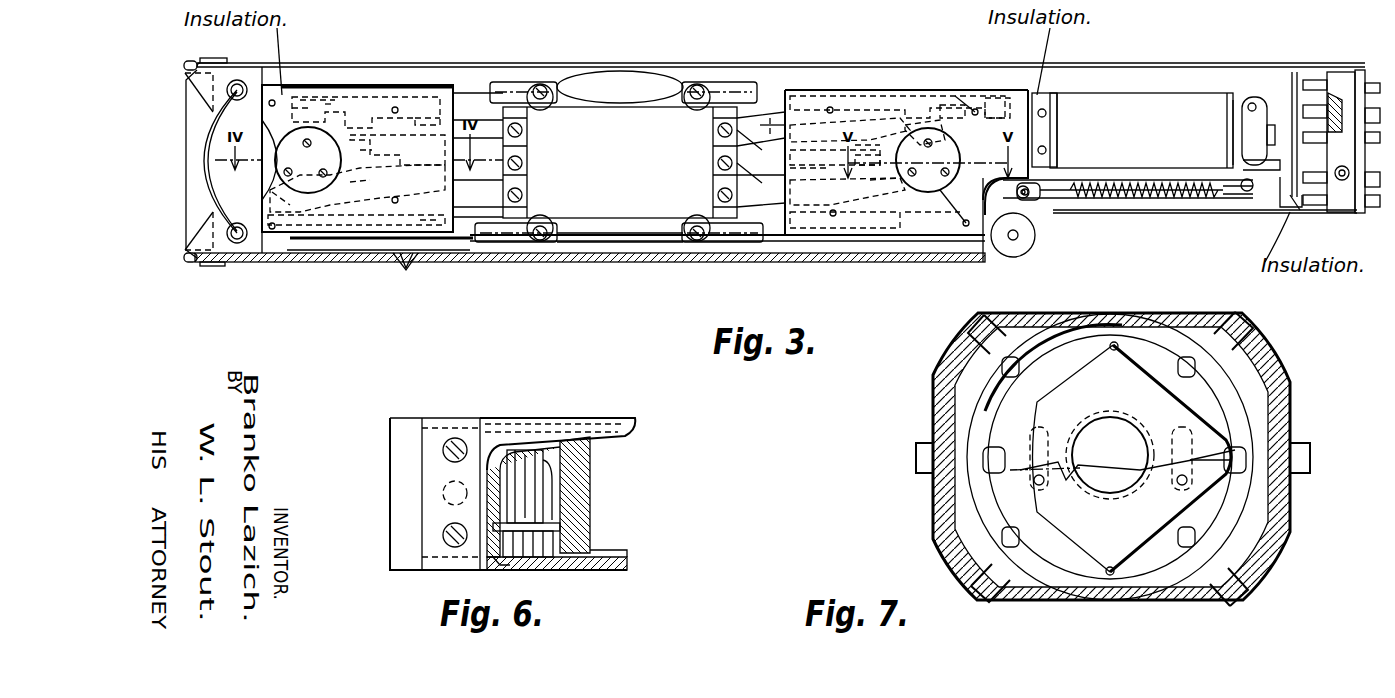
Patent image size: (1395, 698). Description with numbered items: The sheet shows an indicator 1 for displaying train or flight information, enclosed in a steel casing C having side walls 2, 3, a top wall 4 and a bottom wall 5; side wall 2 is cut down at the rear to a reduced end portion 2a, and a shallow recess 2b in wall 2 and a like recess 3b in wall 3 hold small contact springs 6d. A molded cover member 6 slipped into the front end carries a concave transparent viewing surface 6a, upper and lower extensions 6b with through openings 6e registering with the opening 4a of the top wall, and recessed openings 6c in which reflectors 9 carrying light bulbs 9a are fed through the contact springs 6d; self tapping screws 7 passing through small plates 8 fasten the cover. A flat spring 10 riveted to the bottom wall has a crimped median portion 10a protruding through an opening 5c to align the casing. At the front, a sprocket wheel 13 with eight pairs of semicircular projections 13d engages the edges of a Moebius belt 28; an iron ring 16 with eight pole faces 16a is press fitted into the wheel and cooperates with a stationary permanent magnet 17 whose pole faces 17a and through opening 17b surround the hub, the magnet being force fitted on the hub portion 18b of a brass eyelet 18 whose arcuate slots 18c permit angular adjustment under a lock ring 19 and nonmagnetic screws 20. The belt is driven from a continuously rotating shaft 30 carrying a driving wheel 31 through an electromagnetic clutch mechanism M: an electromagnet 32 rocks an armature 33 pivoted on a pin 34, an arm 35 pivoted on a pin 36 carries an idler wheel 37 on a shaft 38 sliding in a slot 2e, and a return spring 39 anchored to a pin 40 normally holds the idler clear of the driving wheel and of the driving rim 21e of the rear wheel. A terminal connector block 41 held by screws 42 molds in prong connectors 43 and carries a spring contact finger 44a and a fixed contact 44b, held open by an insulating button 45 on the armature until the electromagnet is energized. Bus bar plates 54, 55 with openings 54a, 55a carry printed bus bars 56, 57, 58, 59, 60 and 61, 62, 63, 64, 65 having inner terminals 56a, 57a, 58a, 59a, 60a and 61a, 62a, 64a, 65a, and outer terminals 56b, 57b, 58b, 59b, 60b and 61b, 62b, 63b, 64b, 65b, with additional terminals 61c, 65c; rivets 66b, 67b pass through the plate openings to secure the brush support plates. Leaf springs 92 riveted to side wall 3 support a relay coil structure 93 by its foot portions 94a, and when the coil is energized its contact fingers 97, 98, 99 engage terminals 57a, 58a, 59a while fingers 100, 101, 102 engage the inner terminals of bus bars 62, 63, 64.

In FIG. 3, the indicator 1 is at (195, 188).
In FIG. 3, the side wall 2 is at (640, 243).
In FIG. 6, the side wall 2 is at (618, 424).
In FIG. 3, the reduced end portion 2a is at (1155, 80).
In FIG. 6, the shallow recess 2b is at (528, 424).
In FIG. 3, the slot 2e is at (1000, 212).
In FIG. 6, the side wall 3 is at (620, 557).
In FIG. 6, the shallow recess 3b is at (500, 565).
In FIG. 3, the top wall 4 is at (590, 63).
In FIG. 6, the opening 4a is at (443, 493).
In FIG. 3, the bottom wall 5 is at (620, 262).
In FIG. 3, the opening 5c is at (405, 265).
In FIG. 3, the cover member 6 is at (190, 75).
In FIG. 6, the cover member 6 is at (390, 440).
In FIG. 3, the viewing surface 6a is at (203, 160).
In FIG. 3, the extensions 6b is at (188, 76).
In FIG. 6, the extensions 6b is at (401, 418).
In FIG. 3, the recessed openings 6c is at (237, 80).
In FIG. 6, the recessed openings 6c is at (590, 480).
In FIG. 6, the contact springs 6d is at (556, 440).
In FIG. 3, the through openings 6e is at (192, 72).
In FIG. 6, the self tapping screws 7 is at (457, 438).
In FIG. 3, the small plates 8 is at (214, 58).
In FIG. 6, the small plates 8 is at (431, 427).
In FIG. 6, the reflector 9 is at (530, 460).
In FIG. 6, the light bulb 9a is at (565, 515).
In FIG. 3, the flat spring 10 is at (312, 243).
In FIG. 3, the crimped median portion 10a is at (406, 262).
In FIG. 7, the sprocket wheel 13 is at (1262, 425).
In FIG. 3, the semicircular projections 13d is at (279, 86).
In FIG. 7, the semicircular projections 13d is at (1240, 325).
In FIG. 7, the ring 16 is at (1172, 410).
In FIG. 7, the pole faces 16a is at (1186, 355).
In FIG. 7, the permanent magnet 17 is at (1227, 402).
In FIG. 7, the pole faces 17a is at (1116, 341).
In FIG. 7, the through opening 17b is at (1106, 494).
In FIG. 7, the eyelet 18 is at (1040, 476).
In FIG. 7, the hub portion 18b is at (1258, 448).
In FIG. 7, the arcuate slots 18c is at (1292, 452).
In FIG. 7, the lock ring 19 is at (1147, 420).
In FIG. 7, the screws 20 is at (1046, 433).
In FIG. 3, the driving rim 21e is at (983, 264).
In FIG. 3, the Moebius belt 28 is at (615, 78).
In FIG. 3, the rotating shafts 30 is at (1030, 248).
In FIG. 3, the driving wheels 31 is at (1016, 241).
In FIG. 3, the electromagnet 32 is at (1163, 140).
In FIG. 3, the armature 33 is at (1255, 97).
In FIG. 3, the pin 34 is at (1240, 98).
In FIG. 3, the arm 35 is at (1210, 200).
In FIG. 3, the pin 36 is at (1245, 192).
In FIG. 3, the idler wheel 37 is at (1028, 198).
In FIG. 3, the shaft 38 is at (1040, 190).
In FIG. 3, the return spring 39 is at (1126, 199).
In FIG. 3, the pin 40 is at (1200, 199).
In FIG. 3, the terminal connector block 41 is at (1360, 70).
In FIG. 3, the screws 42 is at (1340, 72).
In FIG. 3, the prong connectors 43 is at (1332, 98).
In FIG. 3, the spring contact finger 44a is at (1290, 110).
In FIG. 3, the fixed contact 44b is at (1290, 208).
In FIG. 3, the button 45 is at (1265, 200).
In FIG. 3, the bus bar plate 54 is at (272, 240).
In FIG. 3, the circular opening 54a is at (272, 165).
In FIG. 3, the bus bar plate 55 is at (966, 226).
In FIG. 3, the circular opening 55a is at (940, 212).
In FIG. 3, the bus bar 56 is at (342, 226).
In FIG. 3, the enlarged terminal 56a is at (440, 226).
In FIG. 3, the enlarged terminal 56b is at (332, 202).
In FIG. 3, the bus bar 57 is at (362, 212).
In FIG. 3, the enlarged terminal 57a is at (446, 215).
In FIG. 3, the enlarged terminal 57b is at (368, 182).
In FIG. 3, the bus bar 58 is at (397, 149).
In FIG. 3, the enlarged terminal 58a is at (490, 118).
In FIG. 3, the enlarged terminal 58b is at (376, 155).
In FIG. 3, the bus bar 59 is at (352, 108).
In FIG. 3, the enlarged terminal 59a is at (430, 98).
In FIG. 3, the enlarged terminal 59b is at (330, 106).
In FIG. 3, the bus bar 60 is at (372, 98).
In FIG. 3, the enlarged terminal 60a is at (418, 100).
In FIG. 3, the enlarged terminal 60b is at (315, 102).
In FIG. 3, the bus bar 61 is at (835, 240).
In FIG. 3, the enlarged terminal 61a is at (792, 228).
In FIG. 3, the enlarged terminal 61b is at (935, 240).
In FIG. 3, the enlarged terminal 61c is at (1040, 93).
In FIG. 3, the bus bar 62 is at (800, 232).
In FIG. 3, the enlarged terminal 62a is at (832, 188).
In FIG. 3, the enlarged terminal 62b is at (872, 232).
In FIG. 3, the bus bar 63 is at (868, 132).
In FIG. 3, the enlarged terminal 63b is at (872, 150).
In FIG. 3, the bus bar 64 is at (870, 120).
In FIG. 3, the enlarged terminal 64a is at (820, 100).
In FIG. 3, the enlarged terminal 64b is at (918, 108).
In FIG. 3, the bus bar 65 is at (845, 96).
In FIG. 3, the enlarged terminal 65a is at (830, 97).
In FIG. 3, the enlarged terminal 65b is at (955, 100).
In FIG. 3, the enlarged terminal 65c is at (990, 100).
In FIG. 3, the rivets 66b is at (290, 172).
In FIG. 3, the rivets 67b is at (945, 175).
In FIG. 3, the leaf springs 92 is at (505, 82).
In FIG. 3, the relay coil structure 93 is at (604, 178).
In FIG. 3, the foot portions 94a is at (541, 84).
In FIG. 3, the contact finger 97 is at (522, 193).
In FIG. 3, the contact finger 98 is at (522, 161).
In FIG. 3, the contact finger 99 is at (522, 129).
In FIG. 3, the contact finger 100 is at (718, 193).
In FIG. 3, the contact finger 101 is at (718, 161).
In FIG. 3, the contact finger 102 is at (718, 129).
In FIG. 3, the casing C is at (337, 50).
In FIG. 3, the electromagnetic clutch mechanism M is at (1130, 82).